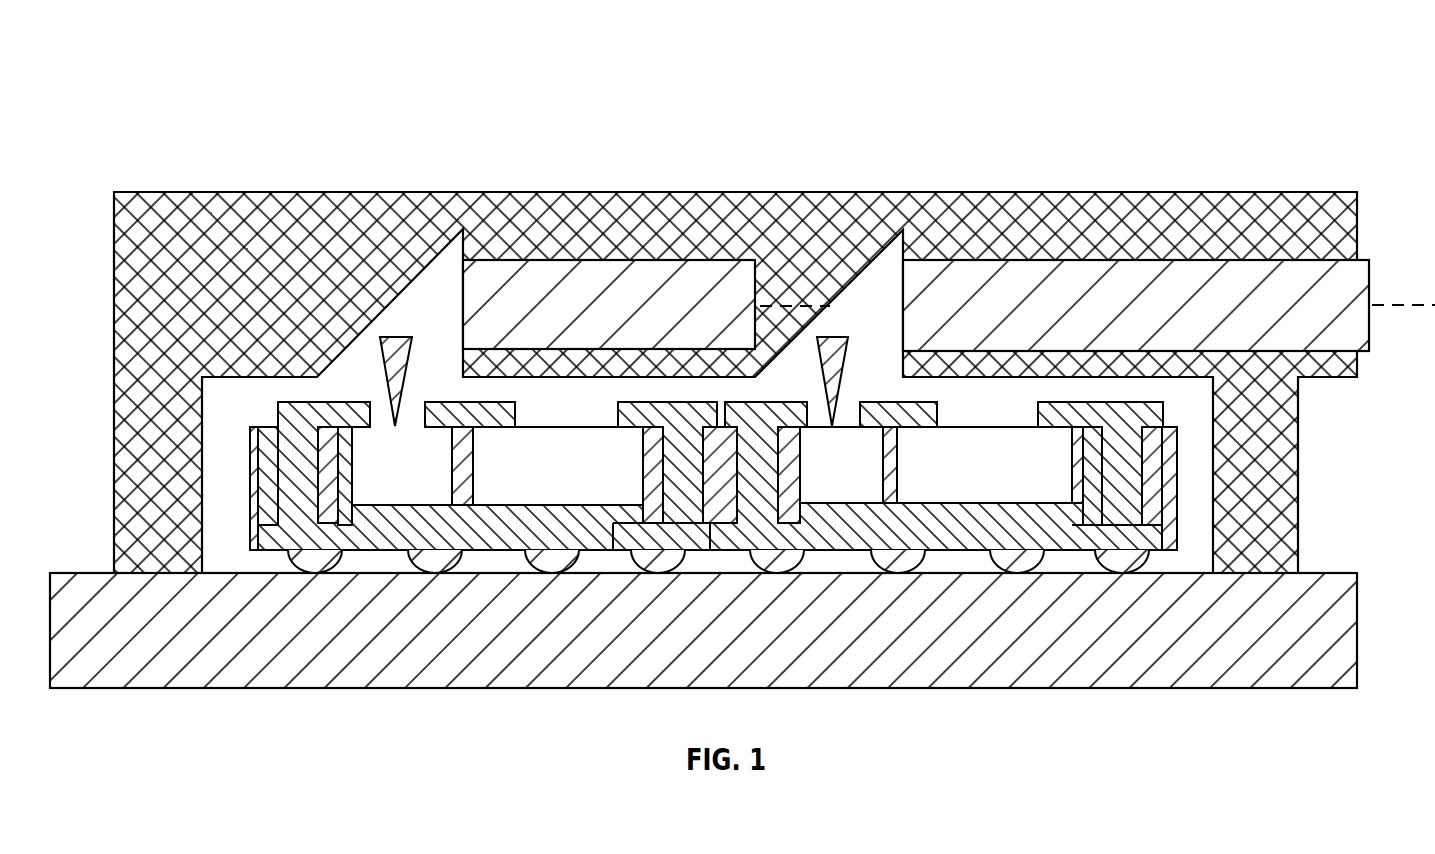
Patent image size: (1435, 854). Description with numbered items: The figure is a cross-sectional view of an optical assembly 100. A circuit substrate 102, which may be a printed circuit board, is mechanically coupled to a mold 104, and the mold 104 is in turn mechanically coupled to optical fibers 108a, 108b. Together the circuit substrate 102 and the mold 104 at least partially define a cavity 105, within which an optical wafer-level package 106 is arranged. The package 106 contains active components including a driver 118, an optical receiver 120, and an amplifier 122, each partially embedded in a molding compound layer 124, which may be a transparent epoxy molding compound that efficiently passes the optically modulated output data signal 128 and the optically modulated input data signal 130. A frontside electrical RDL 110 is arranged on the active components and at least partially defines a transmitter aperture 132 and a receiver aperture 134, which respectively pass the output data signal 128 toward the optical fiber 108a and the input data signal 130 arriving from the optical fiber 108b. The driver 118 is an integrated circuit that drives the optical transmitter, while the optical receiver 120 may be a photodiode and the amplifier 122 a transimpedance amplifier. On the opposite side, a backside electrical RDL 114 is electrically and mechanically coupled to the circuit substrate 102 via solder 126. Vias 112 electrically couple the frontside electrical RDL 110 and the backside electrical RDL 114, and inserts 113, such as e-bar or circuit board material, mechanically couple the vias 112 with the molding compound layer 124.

The optical assembly 100 is at (742, 396).
The circuit substrate 102 is at (351, 644).
The mold 104 is at (250, 208).
The cavity 105 is at (741, 426).
The optical wafer-level package 106 is at (641, 398).
The optical fiber 108a is at (611, 319).
The optical fiber 108b is at (1161, 321).
The frontside electrical RDL 110 is at (1168, 412).
The vias 112 is at (1127, 457).
The inserts 113 is at (266, 428).
The backside electrical RDL 114 is at (256, 545).
The driver 118 is at (579, 478).
The optical receiver 120 is at (862, 478).
The amplifier 122 is at (1006, 478).
The molding compound layer 124 is at (524, 543).
The solder 126 is at (1134, 563).
The optically modulated output data signal 128 is at (404, 362).
The optically modulated input data signal 130 is at (843, 351).
The transmitter aperture 132 is at (380, 395).
The receiver aperture 134 is at (819, 395).